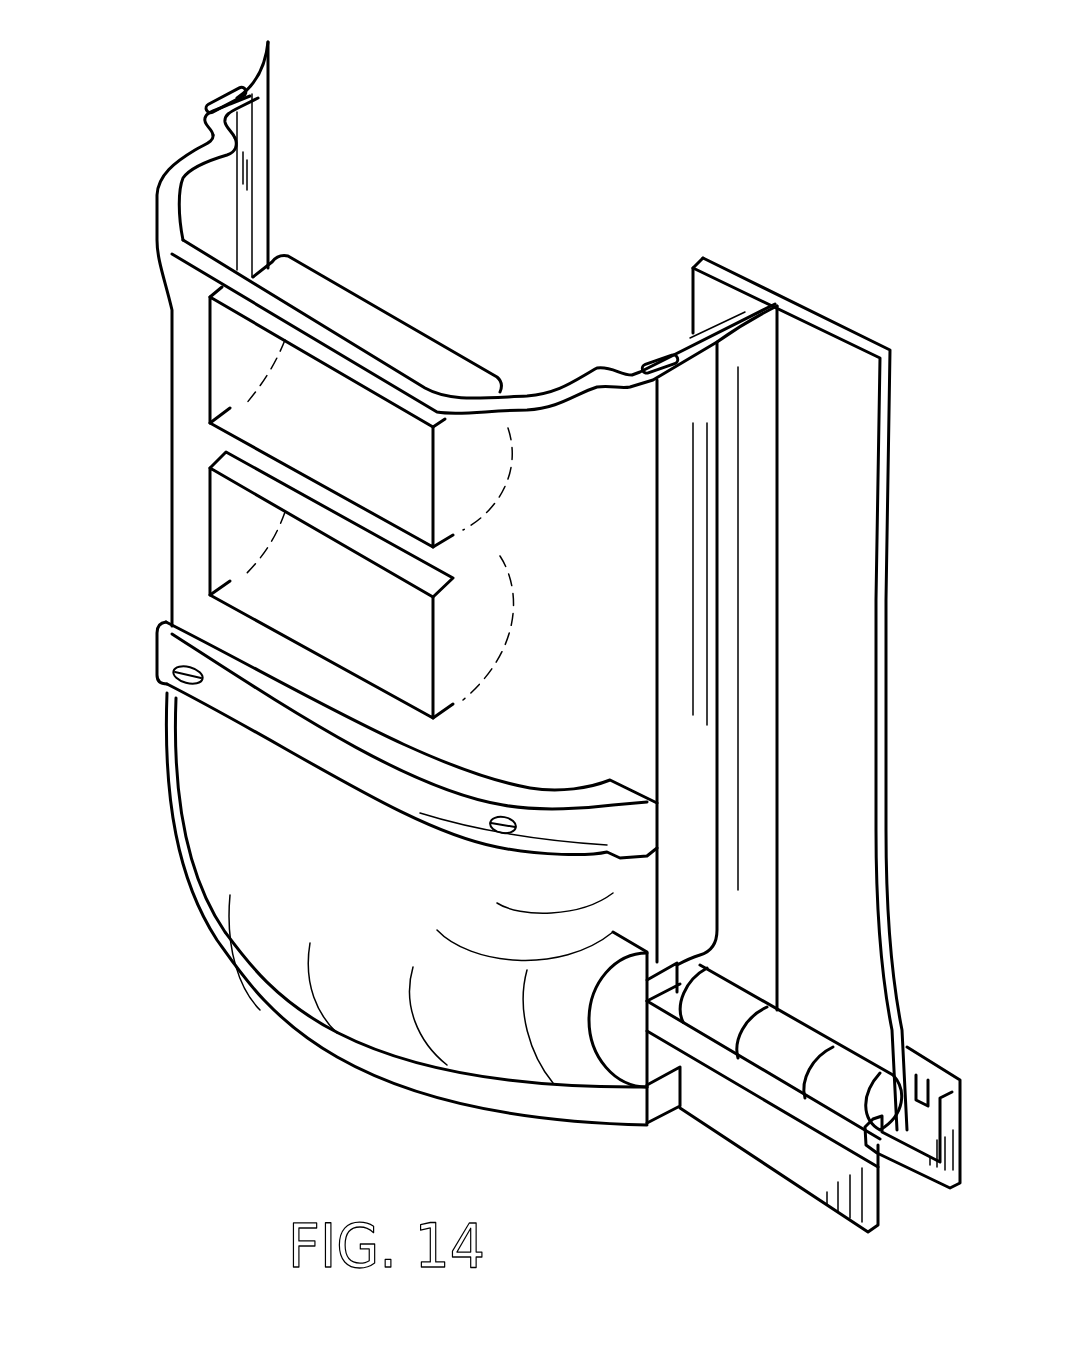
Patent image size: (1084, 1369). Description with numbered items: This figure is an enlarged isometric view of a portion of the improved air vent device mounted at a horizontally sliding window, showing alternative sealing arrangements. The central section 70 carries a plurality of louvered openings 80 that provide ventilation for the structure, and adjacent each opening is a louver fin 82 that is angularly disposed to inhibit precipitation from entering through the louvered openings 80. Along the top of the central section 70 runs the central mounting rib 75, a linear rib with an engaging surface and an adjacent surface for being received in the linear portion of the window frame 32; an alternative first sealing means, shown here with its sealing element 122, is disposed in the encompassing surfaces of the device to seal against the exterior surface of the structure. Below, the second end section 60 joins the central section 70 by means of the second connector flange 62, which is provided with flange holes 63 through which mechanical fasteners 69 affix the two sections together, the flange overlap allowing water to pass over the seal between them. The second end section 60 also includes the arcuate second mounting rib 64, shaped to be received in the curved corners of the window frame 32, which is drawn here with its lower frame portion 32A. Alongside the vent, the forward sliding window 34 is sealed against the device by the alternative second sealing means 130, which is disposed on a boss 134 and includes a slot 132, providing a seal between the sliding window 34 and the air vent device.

The flange 122 is at (230, 100).
The central mounting rib 75 is at (205, 117).
The central section 70 is at (190, 463).
The louvered openings 80 is at (253, 390).
The louver fins 82 is at (283, 575).
The second sealing means 130 is at (742, 305).
The slot 132 is at (668, 362).
The boss 134 is at (646, 427).
The forward sliding window 34 is at (857, 570).
The second connector flange 62 is at (340, 763).
The flange holes 63 is at (187, 690).
The mechanical fasteners 69 is at (176, 690).
The second end section 60 is at (273, 962).
The second mounting rib 64 is at (485, 1112).
The lower frame portion 32A is at (713, 1113).
The window frame 32 is at (797, 1160).